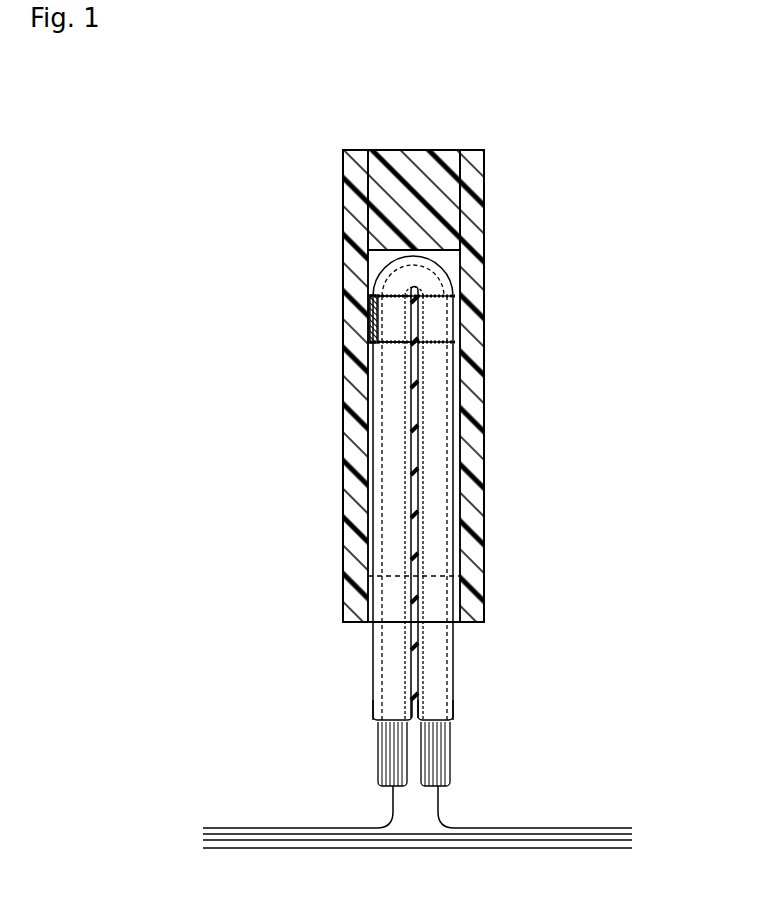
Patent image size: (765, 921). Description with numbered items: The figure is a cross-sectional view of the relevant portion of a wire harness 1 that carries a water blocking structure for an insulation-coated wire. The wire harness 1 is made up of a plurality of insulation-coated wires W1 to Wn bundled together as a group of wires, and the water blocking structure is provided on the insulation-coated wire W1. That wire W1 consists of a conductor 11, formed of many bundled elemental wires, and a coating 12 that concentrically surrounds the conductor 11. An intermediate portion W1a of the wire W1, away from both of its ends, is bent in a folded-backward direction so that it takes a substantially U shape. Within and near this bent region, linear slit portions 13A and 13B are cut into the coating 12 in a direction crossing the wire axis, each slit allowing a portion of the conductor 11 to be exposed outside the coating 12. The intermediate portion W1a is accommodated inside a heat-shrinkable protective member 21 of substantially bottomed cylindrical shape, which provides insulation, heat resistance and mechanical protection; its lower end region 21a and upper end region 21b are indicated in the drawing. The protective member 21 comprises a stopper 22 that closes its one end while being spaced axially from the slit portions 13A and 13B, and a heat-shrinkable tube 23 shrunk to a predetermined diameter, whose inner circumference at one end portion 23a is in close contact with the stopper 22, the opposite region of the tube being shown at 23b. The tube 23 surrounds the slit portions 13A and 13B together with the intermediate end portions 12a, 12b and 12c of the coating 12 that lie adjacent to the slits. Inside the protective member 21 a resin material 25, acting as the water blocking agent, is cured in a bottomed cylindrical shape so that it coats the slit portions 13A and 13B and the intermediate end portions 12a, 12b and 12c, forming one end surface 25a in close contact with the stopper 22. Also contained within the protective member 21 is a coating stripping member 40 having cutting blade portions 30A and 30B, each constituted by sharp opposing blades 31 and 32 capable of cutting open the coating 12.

The wire harness 1 is at (590, 817).
The conductor 11 is at (450, 762).
The coating 12 is at (453, 698).
The intermediate end portion 12a is at (376, 298).
The intermediate end portion 12b is at (377, 340).
The intermediate end portion 12c is at (375, 330).
The slit portion 13A is at (388, 280).
The slit portion 13B is at (384, 358).
The protective member 21 is at (438, 388).
The lower end of housing 21a is at (357, 622).
The upper end of housing 21b is at (386, 150).
The stopper 22 is at (452, 160).
The heat-shrinkable tube 23 is at (478, 476).
The one end portion 23a is at (476, 192).
The lower side wall portion 23b is at (478, 598).
The resin material 25 is at (457, 403).
The one end surface 25a is at (432, 250).
The cutting blade portion 30A is at (493, 311).
The cutting blade portion 30B is at (493, 356).
The opposing blade 31 is at (452, 302).
The opposing blade 32 is at (452, 346).
The coating stripping member 40 is at (371, 306).
The insulation-coated wire W1 is at (409, 492).
The intermediate portion W1a is at (392, 451).
The insulation-coated wire Wn is at (252, 848).